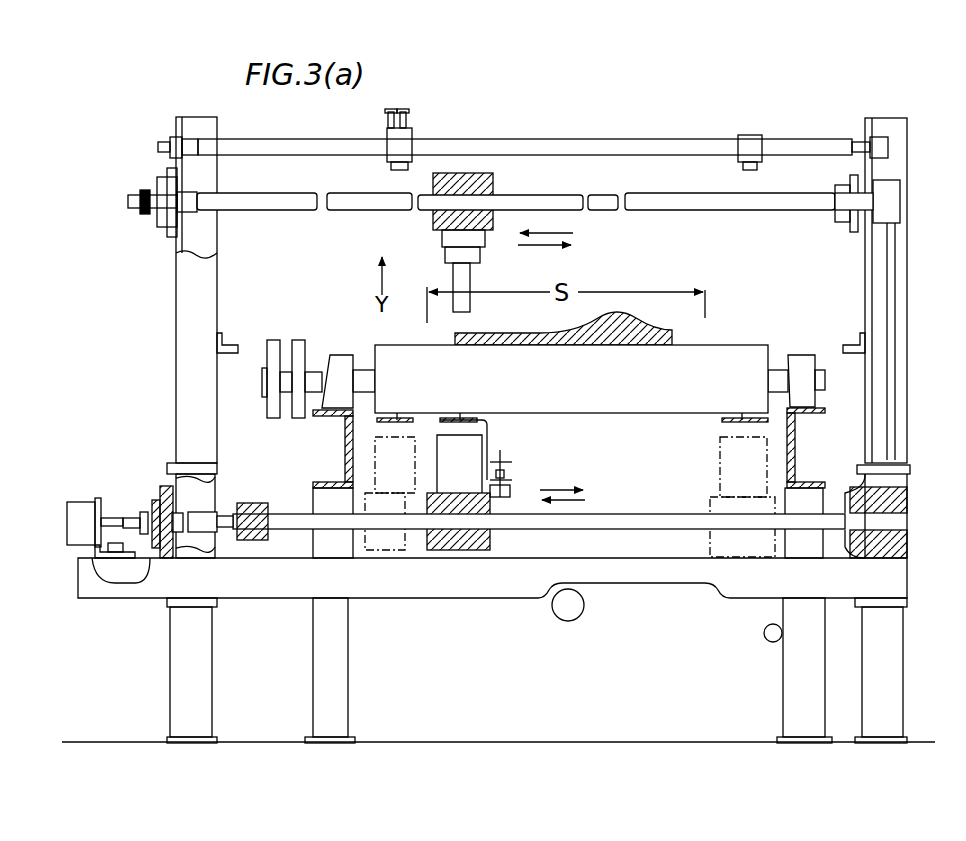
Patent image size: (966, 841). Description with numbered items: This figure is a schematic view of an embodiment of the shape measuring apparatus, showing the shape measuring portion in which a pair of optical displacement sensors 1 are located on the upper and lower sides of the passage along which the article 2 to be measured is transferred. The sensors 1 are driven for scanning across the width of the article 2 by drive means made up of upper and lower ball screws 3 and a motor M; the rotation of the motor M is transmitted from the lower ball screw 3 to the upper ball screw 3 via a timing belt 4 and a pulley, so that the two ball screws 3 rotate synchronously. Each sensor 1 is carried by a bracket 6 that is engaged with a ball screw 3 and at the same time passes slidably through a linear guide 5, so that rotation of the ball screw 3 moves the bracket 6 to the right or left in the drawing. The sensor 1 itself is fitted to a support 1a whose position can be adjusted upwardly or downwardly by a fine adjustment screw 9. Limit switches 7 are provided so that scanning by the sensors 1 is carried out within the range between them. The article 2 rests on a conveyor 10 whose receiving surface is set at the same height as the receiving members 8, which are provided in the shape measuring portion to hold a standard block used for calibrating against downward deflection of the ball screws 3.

The optical displacement sensor 1 is at (470, 285).
The support 1a is at (487, 425).
The article 2 is at (528, 327).
The ball screw 3 is at (716, 212).
The timing belt 4 is at (893, 345).
The linear guide 5 is at (360, 212).
The bracket 6 is at (493, 180).
The limit switch 7 is at (412, 135).
The receiving member 8 is at (233, 343).
The fine adjustment screw 9 is at (505, 490).
The conveyor 10 is at (608, 413).
The motor M is at (82, 500).